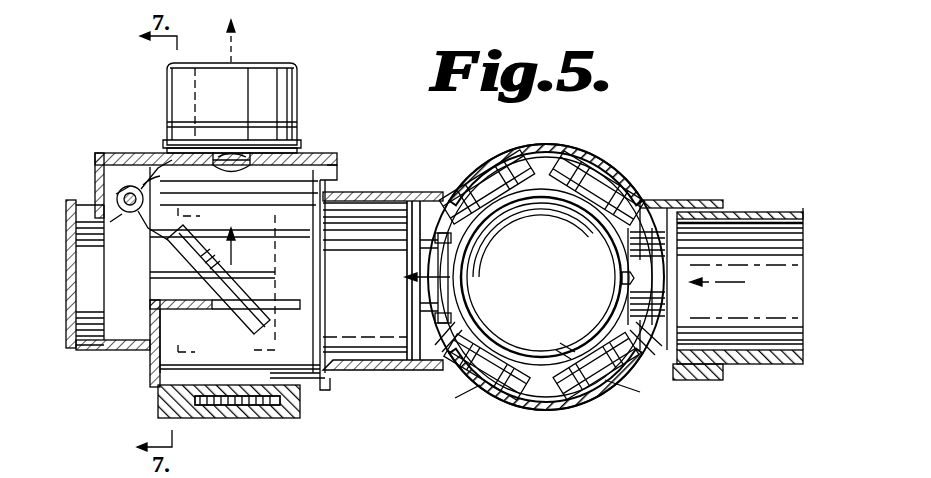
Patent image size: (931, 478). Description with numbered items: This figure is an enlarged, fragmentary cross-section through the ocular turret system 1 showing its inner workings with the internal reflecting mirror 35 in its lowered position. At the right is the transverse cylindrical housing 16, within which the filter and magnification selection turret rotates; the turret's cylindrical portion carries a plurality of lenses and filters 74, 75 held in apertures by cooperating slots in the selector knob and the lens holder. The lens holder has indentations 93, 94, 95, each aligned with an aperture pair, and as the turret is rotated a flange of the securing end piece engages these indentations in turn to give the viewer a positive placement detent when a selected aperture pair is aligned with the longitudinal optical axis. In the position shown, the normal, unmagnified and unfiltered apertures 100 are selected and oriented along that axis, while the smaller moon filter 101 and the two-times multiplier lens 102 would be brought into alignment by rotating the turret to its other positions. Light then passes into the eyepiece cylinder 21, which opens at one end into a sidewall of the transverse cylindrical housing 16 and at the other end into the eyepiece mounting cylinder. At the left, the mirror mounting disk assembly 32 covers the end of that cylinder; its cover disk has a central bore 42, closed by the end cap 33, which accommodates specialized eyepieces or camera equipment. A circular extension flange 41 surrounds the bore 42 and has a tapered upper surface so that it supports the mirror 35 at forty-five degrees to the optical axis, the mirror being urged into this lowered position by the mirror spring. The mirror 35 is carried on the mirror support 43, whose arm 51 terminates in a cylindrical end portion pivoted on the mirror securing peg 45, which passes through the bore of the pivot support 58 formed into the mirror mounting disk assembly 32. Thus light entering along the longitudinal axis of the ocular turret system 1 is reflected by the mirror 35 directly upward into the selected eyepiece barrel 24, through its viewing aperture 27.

The ocular turret system 1 is at (638, 118).
The transverse cylindrical housing 16 is at (492, 153).
The eyepiece cylinder 21 is at (393, 372).
The eyepiece barrel 24 is at (298, 86).
The aperture 27 is at (224, 150).
The mirror mounting disk assembly 32 is at (150, 370).
The end cap 33 is at (66, 236).
The mirror 35 is at (262, 312).
The circular extension flange 41 is at (207, 316).
The bore 42 is at (150, 156).
The mirror support 43 is at (185, 218).
The mirror securing peg 45 is at (118, 193).
The arm 51 is at (150, 240).
The pivot support 58 is at (105, 152).
The lens or filter 74 is at (602, 180).
The lens or filter 75 is at (462, 172).
The indentation 93 is at (621, 280).
The indentation 94 is at (562, 352).
The indentation 95 is at (508, 346).
The unmagnified and unfiltered apertures 100 is at (650, 298).
The moon filter 101 is at (618, 382).
The 2× multiplier lens 102 is at (488, 402).